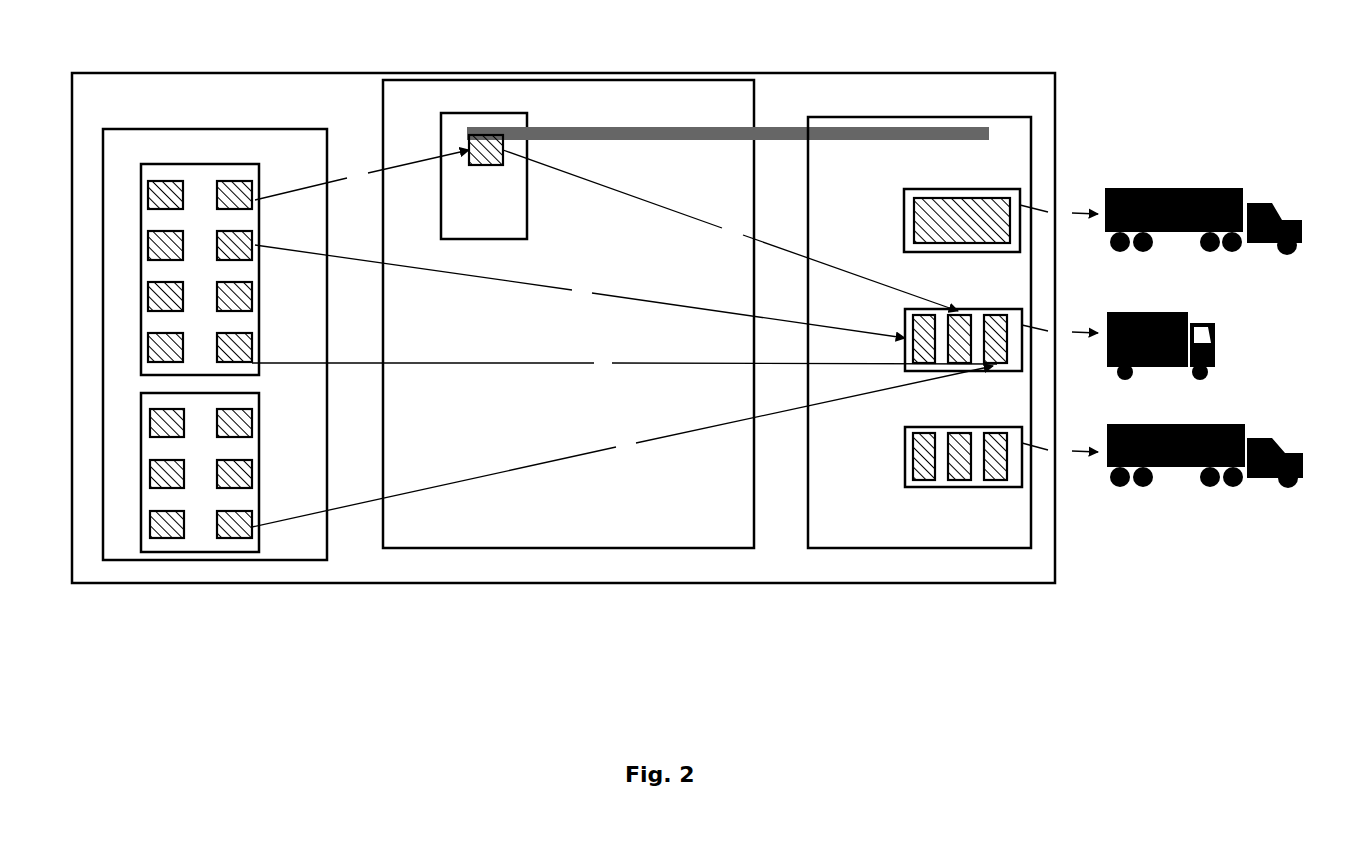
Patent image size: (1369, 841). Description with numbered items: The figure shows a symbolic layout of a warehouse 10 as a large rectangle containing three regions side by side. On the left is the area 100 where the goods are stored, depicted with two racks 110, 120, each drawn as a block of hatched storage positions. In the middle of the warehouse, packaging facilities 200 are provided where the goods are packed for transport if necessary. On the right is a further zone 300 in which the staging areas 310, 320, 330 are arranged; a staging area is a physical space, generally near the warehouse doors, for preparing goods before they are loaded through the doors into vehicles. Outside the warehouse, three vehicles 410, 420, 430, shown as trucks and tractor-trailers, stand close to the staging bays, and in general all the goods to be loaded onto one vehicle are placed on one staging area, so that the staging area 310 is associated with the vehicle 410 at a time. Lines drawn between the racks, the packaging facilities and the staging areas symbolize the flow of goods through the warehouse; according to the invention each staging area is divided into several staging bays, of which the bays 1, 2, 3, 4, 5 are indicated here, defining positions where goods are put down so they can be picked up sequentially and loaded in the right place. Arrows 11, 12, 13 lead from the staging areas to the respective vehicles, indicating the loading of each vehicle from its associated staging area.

The warehouse 10 is at (98, 73).
The area 100 is at (157, 129).
The rack 110 is at (200, 375).
The rack 120 is at (172, 552).
The packaging facilities 200 is at (464, 112).
The zone 300 is at (920, 117).
The staging area 310 is at (990, 190).
The staging area 320 is at (960, 371).
The staging area 330 is at (933, 487).
The vehicle 410 is at (1285, 213).
The vehicle 420 is at (1222, 353).
The vehicle 430 is at (1285, 452).
The staging bay 1 is at (362, 175).
The staging bay 2 is at (730, 230).
The staging bay 3 is at (580, 291).
The staging bay 4 is at (624, 362).
The staging bay 5 is at (622, 446).
The first shipment 11 is at (1059, 212).
The second shipment 12 is at (1060, 331).
The third shipment 13 is at (1060, 449).